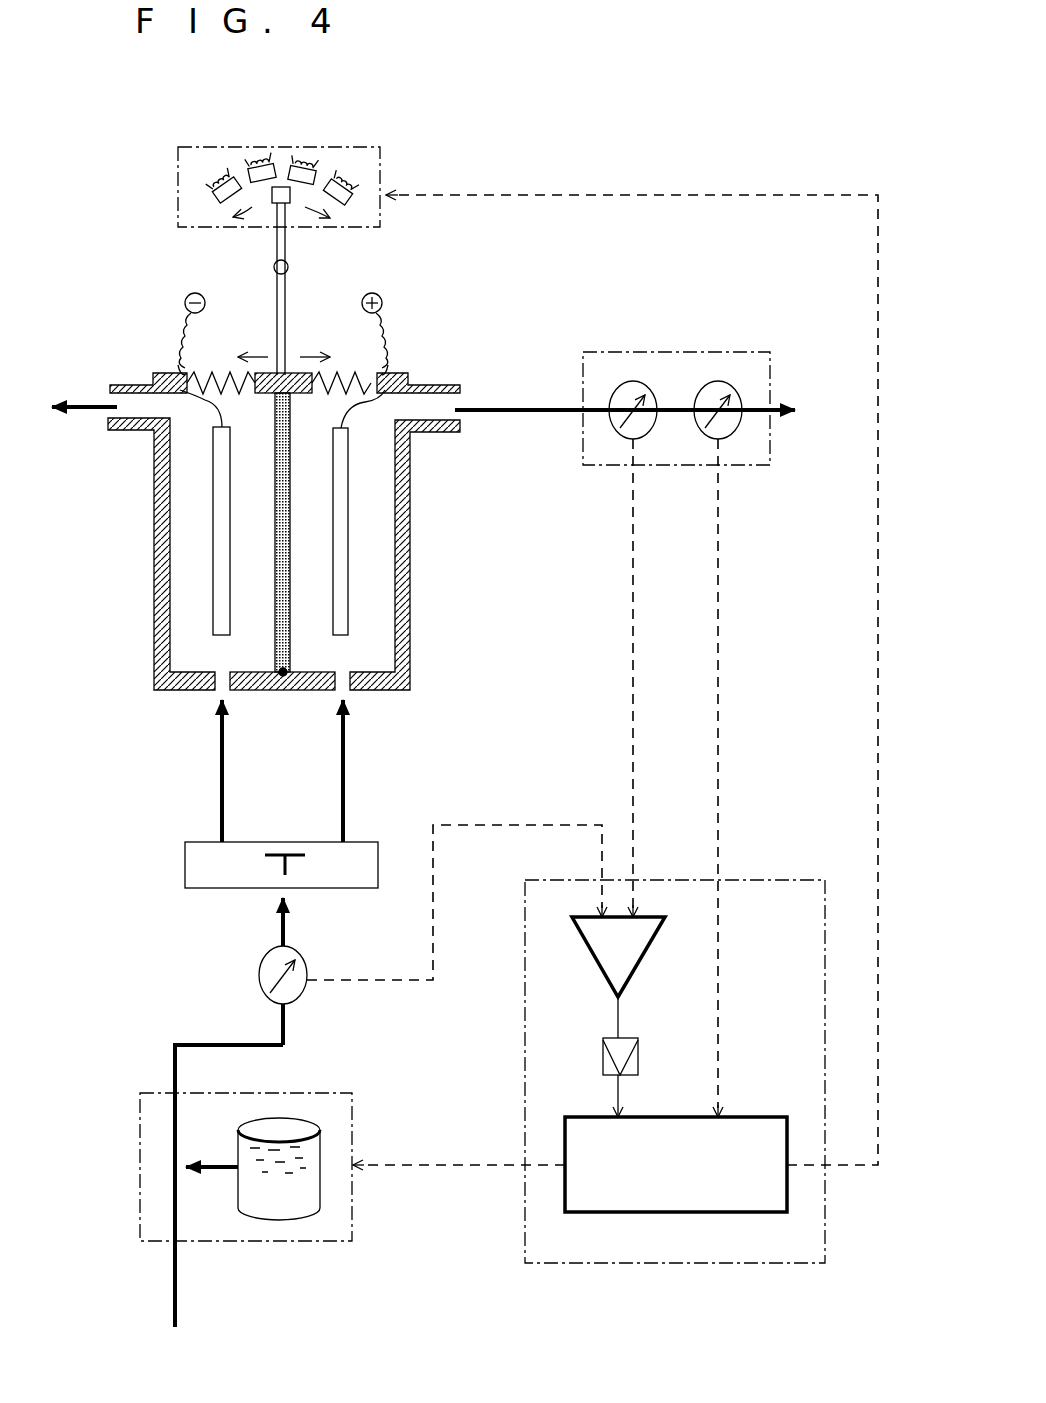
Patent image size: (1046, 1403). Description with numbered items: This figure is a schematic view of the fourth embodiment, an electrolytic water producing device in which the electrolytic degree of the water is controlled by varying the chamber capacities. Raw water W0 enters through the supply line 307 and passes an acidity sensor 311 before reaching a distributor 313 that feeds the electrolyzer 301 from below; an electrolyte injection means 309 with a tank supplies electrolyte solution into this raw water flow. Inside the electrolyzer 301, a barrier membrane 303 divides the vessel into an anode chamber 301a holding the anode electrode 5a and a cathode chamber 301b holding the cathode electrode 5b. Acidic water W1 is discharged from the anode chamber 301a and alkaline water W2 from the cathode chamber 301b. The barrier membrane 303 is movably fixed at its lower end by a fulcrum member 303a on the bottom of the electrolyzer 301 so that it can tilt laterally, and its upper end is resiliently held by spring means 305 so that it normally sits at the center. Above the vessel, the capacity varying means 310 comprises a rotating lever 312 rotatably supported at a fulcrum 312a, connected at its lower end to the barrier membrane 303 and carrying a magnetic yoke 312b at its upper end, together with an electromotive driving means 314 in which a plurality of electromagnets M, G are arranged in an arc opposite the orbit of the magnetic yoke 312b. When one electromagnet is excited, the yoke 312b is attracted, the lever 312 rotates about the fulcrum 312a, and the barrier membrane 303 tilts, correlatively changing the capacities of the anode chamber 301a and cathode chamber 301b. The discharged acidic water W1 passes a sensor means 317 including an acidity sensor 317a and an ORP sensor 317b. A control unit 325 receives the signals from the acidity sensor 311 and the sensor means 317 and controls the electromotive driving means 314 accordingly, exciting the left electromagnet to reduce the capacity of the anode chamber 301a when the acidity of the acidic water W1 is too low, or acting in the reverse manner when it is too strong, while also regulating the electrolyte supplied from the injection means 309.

The capacity varying means 310 is at (162, 245).
The electromotive driving means 314 is at (365, 147).
The electromagnet M is at (230, 182).
The electromagnet G is at (262, 165).
The rotating lever 312 is at (278, 305).
The fulcrum 312a is at (288, 268).
The magnetic yoke 312b is at (292, 202).
The spring means 305 is at (215, 368).
The electrolyzer 301 is at (412, 478).
The anode chamber 301a is at (378, 612).
The cathode chamber 301b is at (168, 588).
The barrier membrane 303 is at (370, 690).
The fulcrum member 303a is at (283, 690).
The anode electrode 5a is at (340, 531).
The cathode electrode 5b is at (213, 504).
The flow distributor 313 is at (190, 862).
The acidity sensor 311 is at (258, 978).
The inlet pipe 307 is at (172, 1072).
The electrolyte injection means 309 is at (335, 1093).
The sensor means 317 is at (673, 352).
The acidity sensor 317a is at (620, 390).
The ORP sensor 317b is at (712, 390).
The control unit 325 is at (765, 880).
The raw water W0 is at (173, 1344).
The acidic water W1 is at (625, 393).
The alkaline water W2 is at (84, 390).